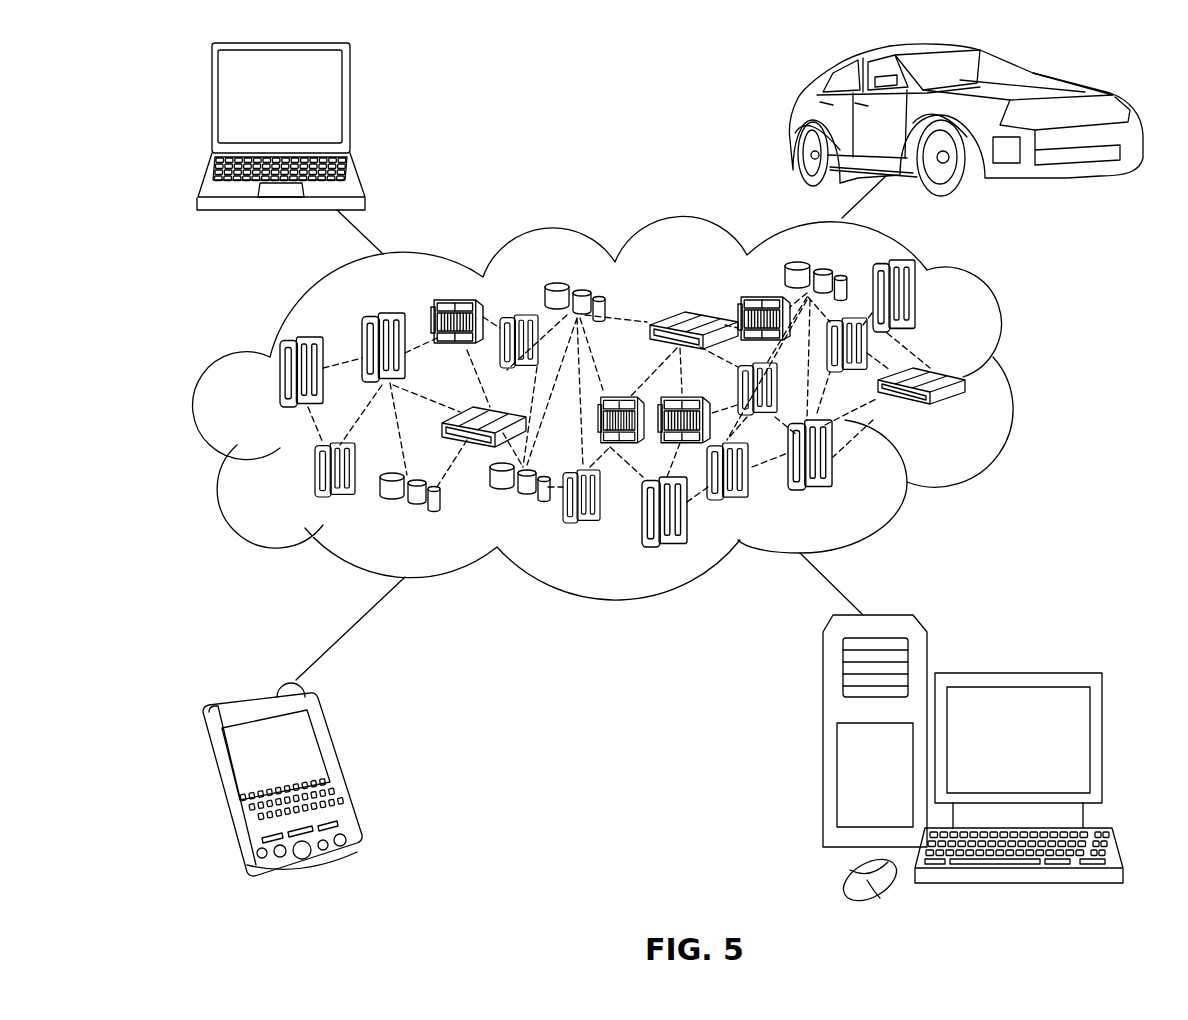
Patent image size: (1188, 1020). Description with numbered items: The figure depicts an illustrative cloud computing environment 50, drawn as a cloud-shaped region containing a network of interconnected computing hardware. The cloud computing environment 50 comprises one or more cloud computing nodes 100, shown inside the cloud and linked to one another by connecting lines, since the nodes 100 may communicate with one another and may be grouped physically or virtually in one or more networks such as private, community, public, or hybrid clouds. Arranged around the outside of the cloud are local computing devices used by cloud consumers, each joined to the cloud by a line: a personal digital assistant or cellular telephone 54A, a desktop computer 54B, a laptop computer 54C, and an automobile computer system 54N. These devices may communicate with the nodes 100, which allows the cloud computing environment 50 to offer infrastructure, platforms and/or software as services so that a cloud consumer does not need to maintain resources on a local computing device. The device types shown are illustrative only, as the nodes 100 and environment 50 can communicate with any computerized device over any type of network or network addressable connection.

The cloud computing environment 50 is at (1017, 385).
The cloud computing nodes 100 is at (962, 413).
The personal digital assistant (PDA) or cellular telephone 54A is at (340, 770).
The desktop computer 54B is at (1015, 672).
The laptop computer 54C is at (350, 106).
The automobile computer system 54N is at (792, 120).